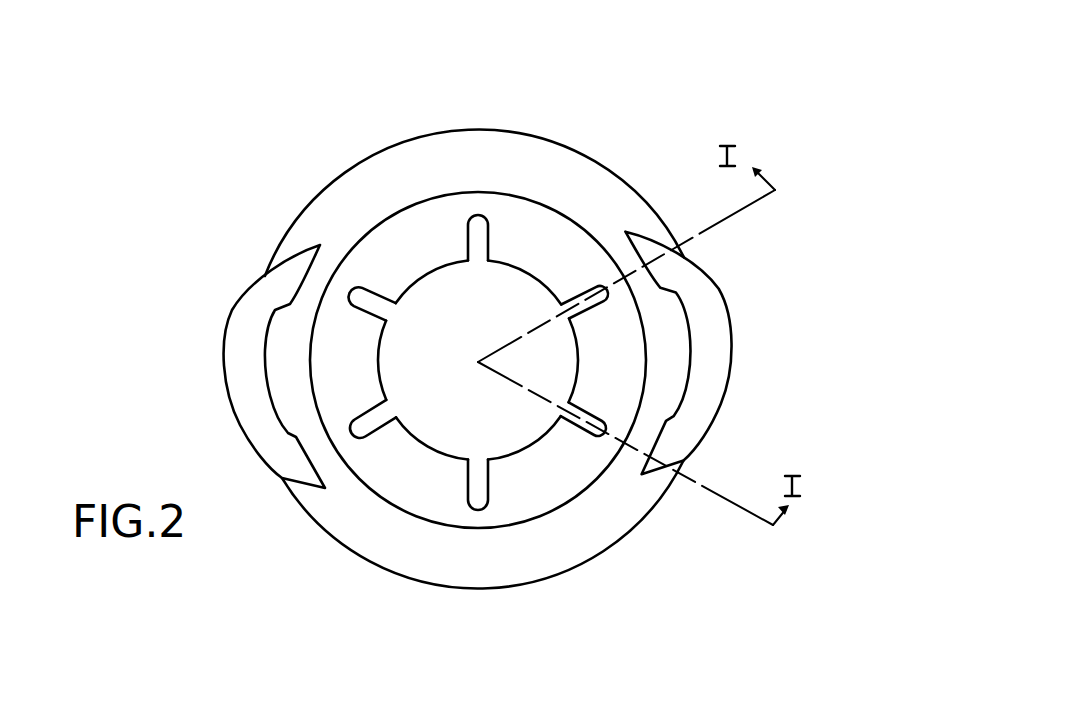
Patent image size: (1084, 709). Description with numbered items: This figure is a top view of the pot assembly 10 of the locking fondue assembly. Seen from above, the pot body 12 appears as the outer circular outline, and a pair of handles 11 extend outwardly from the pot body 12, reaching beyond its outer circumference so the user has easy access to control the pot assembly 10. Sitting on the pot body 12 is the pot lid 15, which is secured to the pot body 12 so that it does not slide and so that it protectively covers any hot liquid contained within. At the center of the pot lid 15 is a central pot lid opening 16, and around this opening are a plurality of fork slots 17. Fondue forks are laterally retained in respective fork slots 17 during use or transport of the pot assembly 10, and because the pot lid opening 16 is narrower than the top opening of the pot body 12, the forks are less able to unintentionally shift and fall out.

The pot assembly 10 is at (434, 112).
The handles 11 is at (290, 255).
The pot body 12 is at (492, 130).
The pot lid 15 is at (552, 208).
The central pot lid opening 16 is at (418, 280).
The fork slots 17 is at (462, 503).